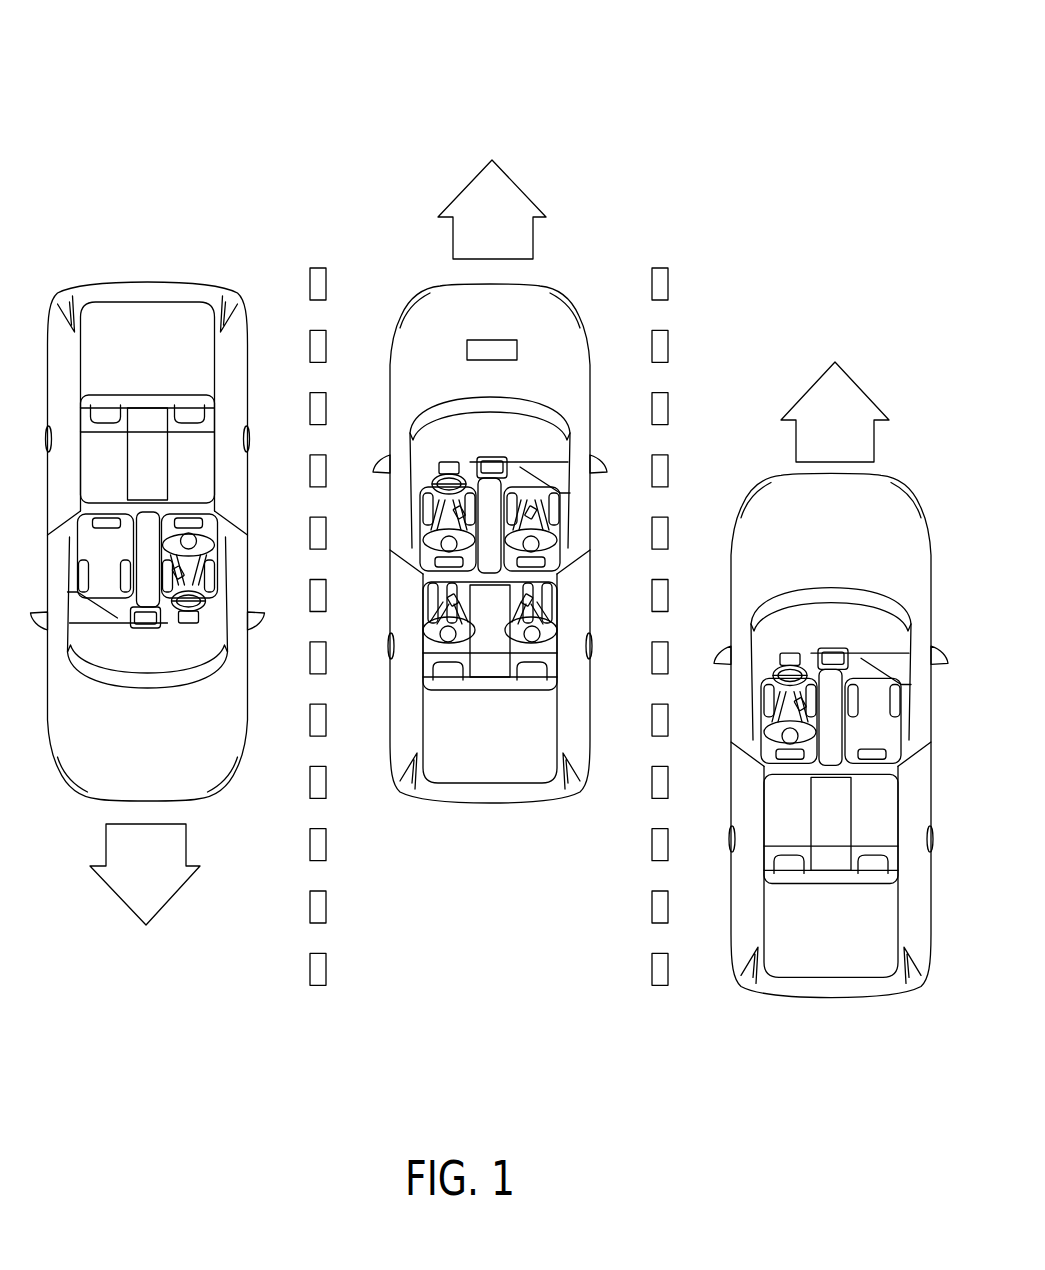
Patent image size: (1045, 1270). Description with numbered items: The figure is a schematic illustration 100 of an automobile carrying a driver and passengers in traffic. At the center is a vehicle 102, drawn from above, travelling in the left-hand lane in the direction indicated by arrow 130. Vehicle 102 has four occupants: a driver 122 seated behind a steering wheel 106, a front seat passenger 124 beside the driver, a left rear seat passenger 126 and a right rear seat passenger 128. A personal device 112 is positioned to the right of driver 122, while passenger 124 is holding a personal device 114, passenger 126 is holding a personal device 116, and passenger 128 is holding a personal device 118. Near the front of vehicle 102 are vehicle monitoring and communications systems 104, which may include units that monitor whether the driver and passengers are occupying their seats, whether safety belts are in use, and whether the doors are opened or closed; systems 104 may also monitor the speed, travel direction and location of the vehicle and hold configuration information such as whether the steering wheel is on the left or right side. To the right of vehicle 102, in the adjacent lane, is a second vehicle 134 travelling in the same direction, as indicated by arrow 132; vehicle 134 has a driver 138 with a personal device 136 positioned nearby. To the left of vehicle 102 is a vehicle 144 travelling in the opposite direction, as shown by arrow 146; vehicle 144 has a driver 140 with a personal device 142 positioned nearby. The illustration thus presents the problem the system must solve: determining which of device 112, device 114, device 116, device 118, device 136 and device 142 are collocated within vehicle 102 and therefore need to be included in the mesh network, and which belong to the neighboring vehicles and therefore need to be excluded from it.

The schematic illustration 100 is at (718, 76).
The vehicle 102 is at (530, 299).
The vehicle monitoring and communications systems 104 is at (487, 338).
The steering wheel 106 is at (450, 467).
The personal device 112 is at (462, 506).
The personal device 114 is at (534, 506).
The personal device 116 is at (453, 600).
The personal device 118 is at (533, 600).
The driver 122 is at (450, 543).
The front seat passenger 124 is at (530, 546).
The left rear seat passenger 126 is at (445, 636).
The right rear seat passenger 128 is at (531, 637).
The arrow 130 is at (523, 190).
The arrow 132 is at (860, 391).
The second vehicle 134 is at (772, 500).
The personal device 136 is at (812, 698).
The driver 138 is at (790, 733).
The driver 140 is at (187, 537).
The personal device 142 is at (170, 573).
The vehicle 144 is at (203, 792).
The arrow 146 is at (120, 897).